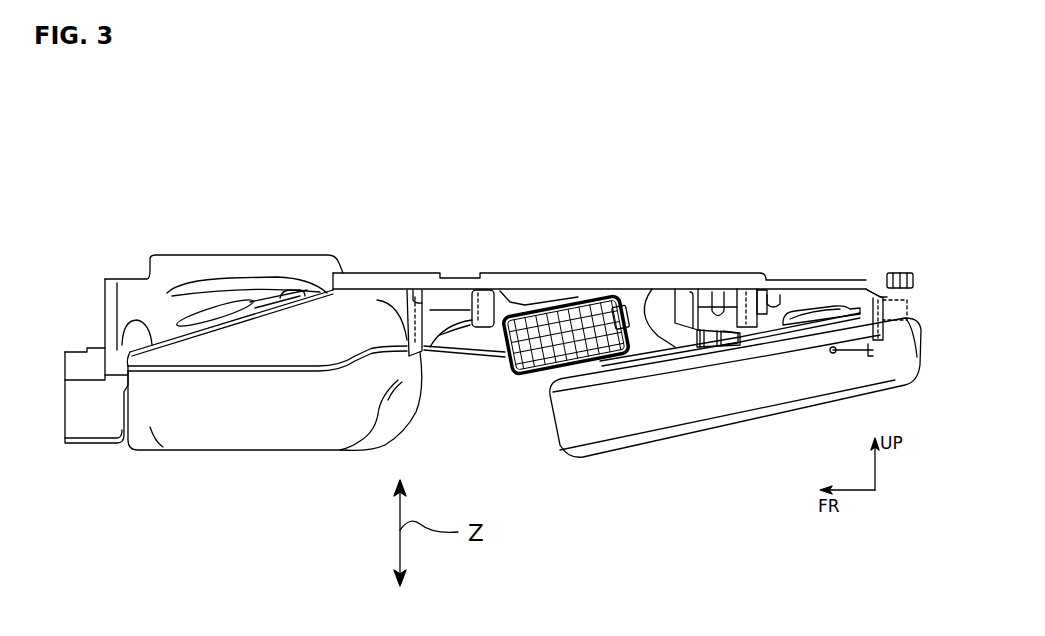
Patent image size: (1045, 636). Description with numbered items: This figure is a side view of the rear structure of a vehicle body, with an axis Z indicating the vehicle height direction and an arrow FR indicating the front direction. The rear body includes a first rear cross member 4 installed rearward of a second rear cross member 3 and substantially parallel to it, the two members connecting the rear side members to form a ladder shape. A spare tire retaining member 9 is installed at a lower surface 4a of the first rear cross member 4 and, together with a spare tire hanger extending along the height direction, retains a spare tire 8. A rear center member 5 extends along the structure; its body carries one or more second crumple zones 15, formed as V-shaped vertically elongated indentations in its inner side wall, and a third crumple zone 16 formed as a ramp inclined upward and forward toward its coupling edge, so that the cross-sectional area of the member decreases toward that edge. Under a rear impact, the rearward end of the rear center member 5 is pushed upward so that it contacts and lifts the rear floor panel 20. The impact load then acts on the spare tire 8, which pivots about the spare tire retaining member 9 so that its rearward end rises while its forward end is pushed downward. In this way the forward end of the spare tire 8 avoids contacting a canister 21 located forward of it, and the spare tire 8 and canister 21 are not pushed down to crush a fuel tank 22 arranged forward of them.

The second rear cross member 3 is at (412, 288).
The first rear cross member 4 is at (673, 289).
The lower surface 4a is at (707, 289).
The rear center member 5 is at (850, 300).
The spare tire 8 is at (676, 438).
The spare tire retaining member 9 is at (647, 288).
The second crumple zone 15 is at (811, 306).
The third crumple zone 16 is at (758, 289).
The rear floor panel 20 is at (537, 273).
The canister 21 is at (498, 290).
The fuel tank 22 is at (240, 450).